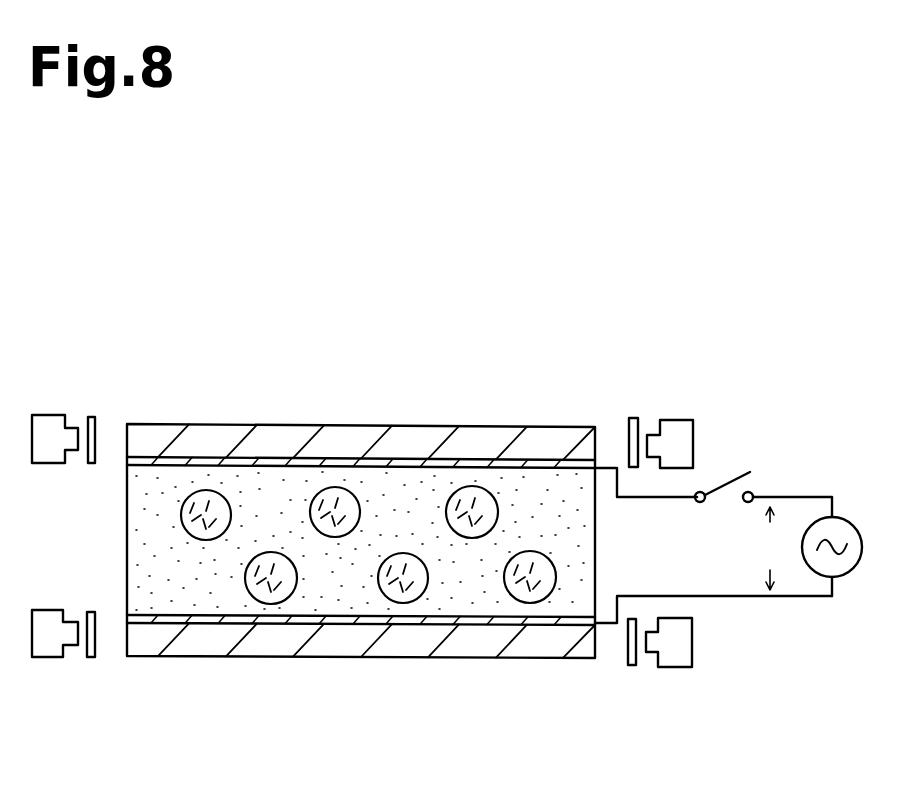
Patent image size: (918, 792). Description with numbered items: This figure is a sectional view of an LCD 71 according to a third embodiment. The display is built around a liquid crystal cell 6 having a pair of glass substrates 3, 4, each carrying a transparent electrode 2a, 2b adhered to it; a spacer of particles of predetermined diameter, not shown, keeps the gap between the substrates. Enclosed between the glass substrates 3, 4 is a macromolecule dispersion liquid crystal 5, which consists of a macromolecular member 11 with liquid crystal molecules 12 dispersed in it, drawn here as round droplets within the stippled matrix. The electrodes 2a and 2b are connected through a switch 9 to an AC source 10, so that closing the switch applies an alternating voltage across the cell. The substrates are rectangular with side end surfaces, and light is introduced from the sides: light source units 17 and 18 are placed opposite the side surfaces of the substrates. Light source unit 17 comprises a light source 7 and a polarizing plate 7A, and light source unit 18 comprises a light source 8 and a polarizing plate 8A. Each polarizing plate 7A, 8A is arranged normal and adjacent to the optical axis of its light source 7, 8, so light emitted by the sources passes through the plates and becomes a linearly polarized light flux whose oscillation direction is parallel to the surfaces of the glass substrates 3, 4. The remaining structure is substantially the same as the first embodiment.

The transparent electrode 2a is at (127, 462).
The transparent electrode 2b is at (127, 618).
The glass substrate 3 is at (230, 437).
The glass substrate 4 is at (205, 648).
The macromolecule dispersion liquid crystal 5 is at (127, 528).
The liquid crystal cell 6 is at (543, 426).
The light source 7 is at (43, 427).
The polarizing plate 7A is at (95, 428).
The light source 8 is at (48, 658).
The polarizing plate 8A is at (93, 647).
The switch 9 is at (723, 485).
The AC source 10 is at (850, 520).
The macromolecular member 11 is at (338, 594).
The liquid crystal molecules 12 is at (418, 603).
The light source unit 17 is at (83, 399).
The light source unit 18 is at (75, 670).
The LCD 71 is at (473, 411).